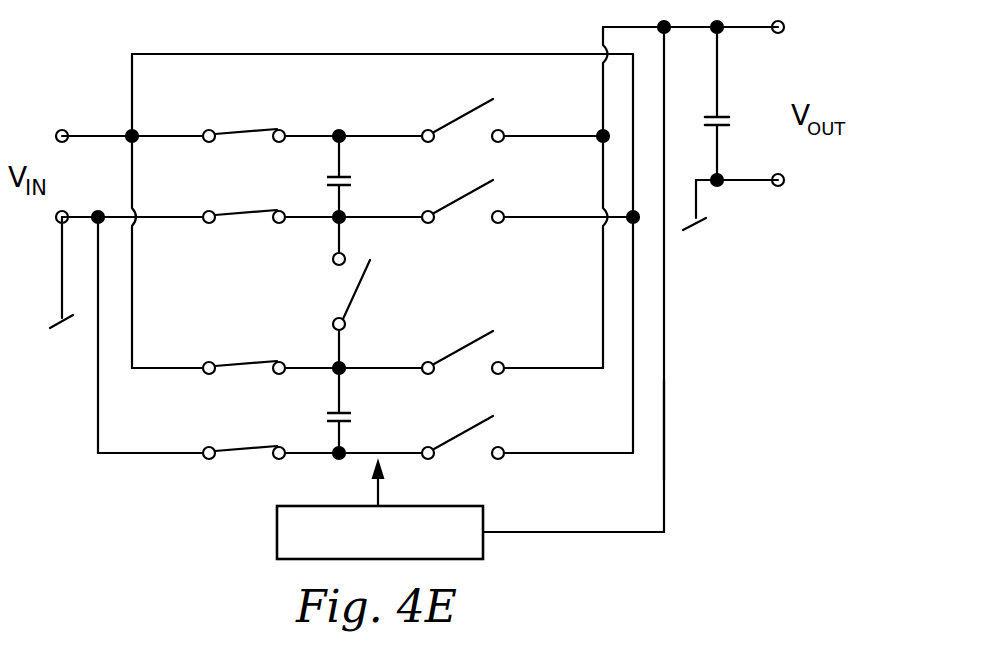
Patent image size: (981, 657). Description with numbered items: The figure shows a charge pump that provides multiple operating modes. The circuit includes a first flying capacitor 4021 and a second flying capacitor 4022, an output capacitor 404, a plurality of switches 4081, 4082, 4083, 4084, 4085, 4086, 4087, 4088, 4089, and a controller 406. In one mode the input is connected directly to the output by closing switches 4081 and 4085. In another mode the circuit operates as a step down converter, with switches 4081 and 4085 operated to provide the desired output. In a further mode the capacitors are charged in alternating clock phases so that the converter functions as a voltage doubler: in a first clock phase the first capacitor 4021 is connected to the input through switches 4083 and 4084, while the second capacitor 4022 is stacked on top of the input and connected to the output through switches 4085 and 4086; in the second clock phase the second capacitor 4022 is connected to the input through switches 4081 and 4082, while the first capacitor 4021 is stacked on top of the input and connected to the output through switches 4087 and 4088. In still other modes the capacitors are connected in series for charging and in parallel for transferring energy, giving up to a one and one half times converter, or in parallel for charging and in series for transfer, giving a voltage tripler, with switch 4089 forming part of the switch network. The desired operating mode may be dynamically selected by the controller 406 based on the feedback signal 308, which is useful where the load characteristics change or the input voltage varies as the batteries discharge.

The switch 4081 is at (228, 133).
The switch 4082 is at (233, 212).
The switch 4083 is at (236, 364).
The switch 4084 is at (247, 450).
The switch 4085 is at (477, 110).
The switch 4086 is at (477, 191).
The switch 4087 is at (477, 342).
The switch 4088 is at (477, 427).
The switch 4089 is at (357, 288).
The first flying capacitor 4021 is at (350, 416).
The second flying capacitor 4022 is at (350, 182).
The output capacitor 404 is at (728, 119).
The controller 406 is at (277, 532).
The feedback signal 308 is at (665, 428).